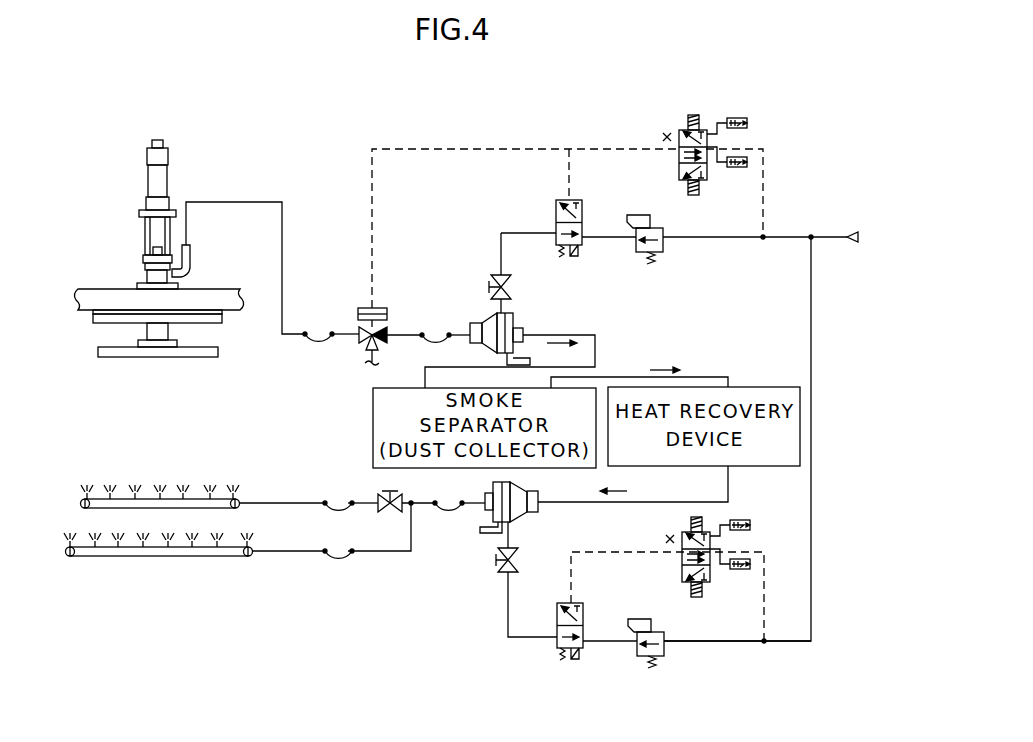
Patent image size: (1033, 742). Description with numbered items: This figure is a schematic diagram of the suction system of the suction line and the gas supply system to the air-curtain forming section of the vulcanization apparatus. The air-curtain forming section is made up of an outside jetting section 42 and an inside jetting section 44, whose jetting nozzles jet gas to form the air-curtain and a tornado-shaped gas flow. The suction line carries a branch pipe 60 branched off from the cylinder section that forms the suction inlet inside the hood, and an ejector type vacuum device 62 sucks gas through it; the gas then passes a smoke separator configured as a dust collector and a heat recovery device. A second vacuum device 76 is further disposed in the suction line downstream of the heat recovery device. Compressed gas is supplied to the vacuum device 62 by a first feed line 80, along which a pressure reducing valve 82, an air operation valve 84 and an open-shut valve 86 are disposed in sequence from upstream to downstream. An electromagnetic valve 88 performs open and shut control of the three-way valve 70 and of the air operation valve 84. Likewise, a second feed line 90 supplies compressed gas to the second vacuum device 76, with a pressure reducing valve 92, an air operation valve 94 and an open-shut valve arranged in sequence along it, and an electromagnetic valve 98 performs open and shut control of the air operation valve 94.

The outside jetting section 42 is at (82, 477).
The inside jetting section 44 is at (78, 572).
The branch pipe 60 is at (192, 248).
The vacuum device 62 is at (520, 320).
The three-way valve 70 is at (383, 308).
The second vacuum device 76 is at (520, 520).
The first feed line 80 is at (732, 238).
The pressure reducing valve 82 is at (665, 247).
The air operation valve 84 is at (582, 212).
The open-shut valve 86 is at (508, 282).
The electromagnetic valve 88 is at (683, 130).
The second feed line 90 is at (727, 643).
The pressure reducing valve 92 is at (663, 658).
The air operation valve 94 is at (582, 648).
The electromagnetic valve 98 is at (680, 570).